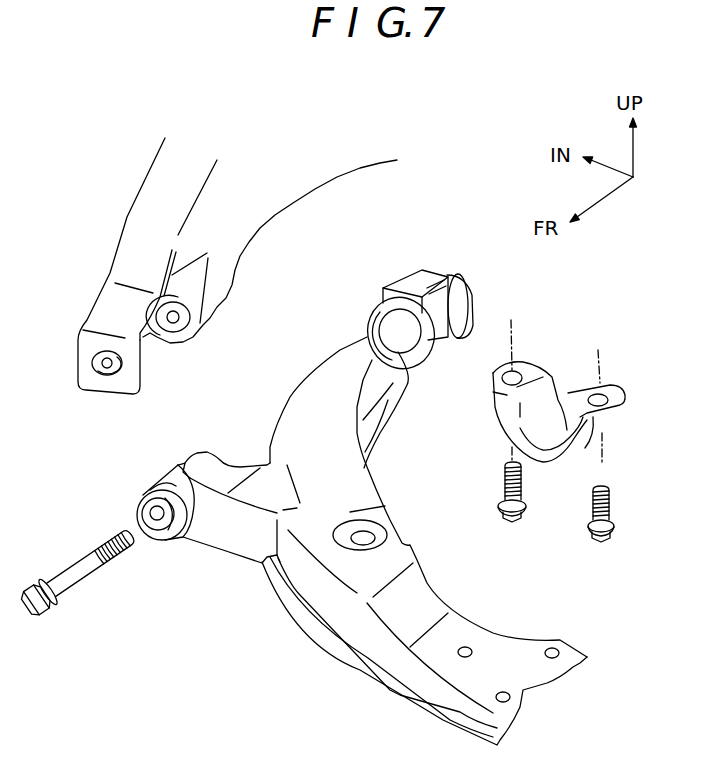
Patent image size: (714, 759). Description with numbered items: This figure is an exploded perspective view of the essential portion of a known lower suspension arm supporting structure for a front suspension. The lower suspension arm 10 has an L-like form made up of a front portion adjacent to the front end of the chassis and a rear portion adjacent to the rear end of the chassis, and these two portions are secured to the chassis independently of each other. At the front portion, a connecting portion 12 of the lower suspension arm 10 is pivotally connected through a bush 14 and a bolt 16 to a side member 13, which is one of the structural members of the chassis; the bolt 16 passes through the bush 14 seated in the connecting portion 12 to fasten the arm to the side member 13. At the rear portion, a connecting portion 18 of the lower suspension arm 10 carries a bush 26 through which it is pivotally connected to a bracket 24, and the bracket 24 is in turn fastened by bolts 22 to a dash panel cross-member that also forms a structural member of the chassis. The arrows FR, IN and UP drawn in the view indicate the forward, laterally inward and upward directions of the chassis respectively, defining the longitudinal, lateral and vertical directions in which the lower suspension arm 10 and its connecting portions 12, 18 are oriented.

The lower suspension arm 10 is at (276, 400).
The connecting portion 12 is at (152, 468).
The side member 13 is at (132, 218).
The bush 14 is at (145, 500).
The bolt 16 is at (127, 555).
The connecting portion 18 is at (375, 279).
The bolts 22 is at (517, 520).
The bracket 24 is at (620, 390).
The bush 26 is at (445, 332).